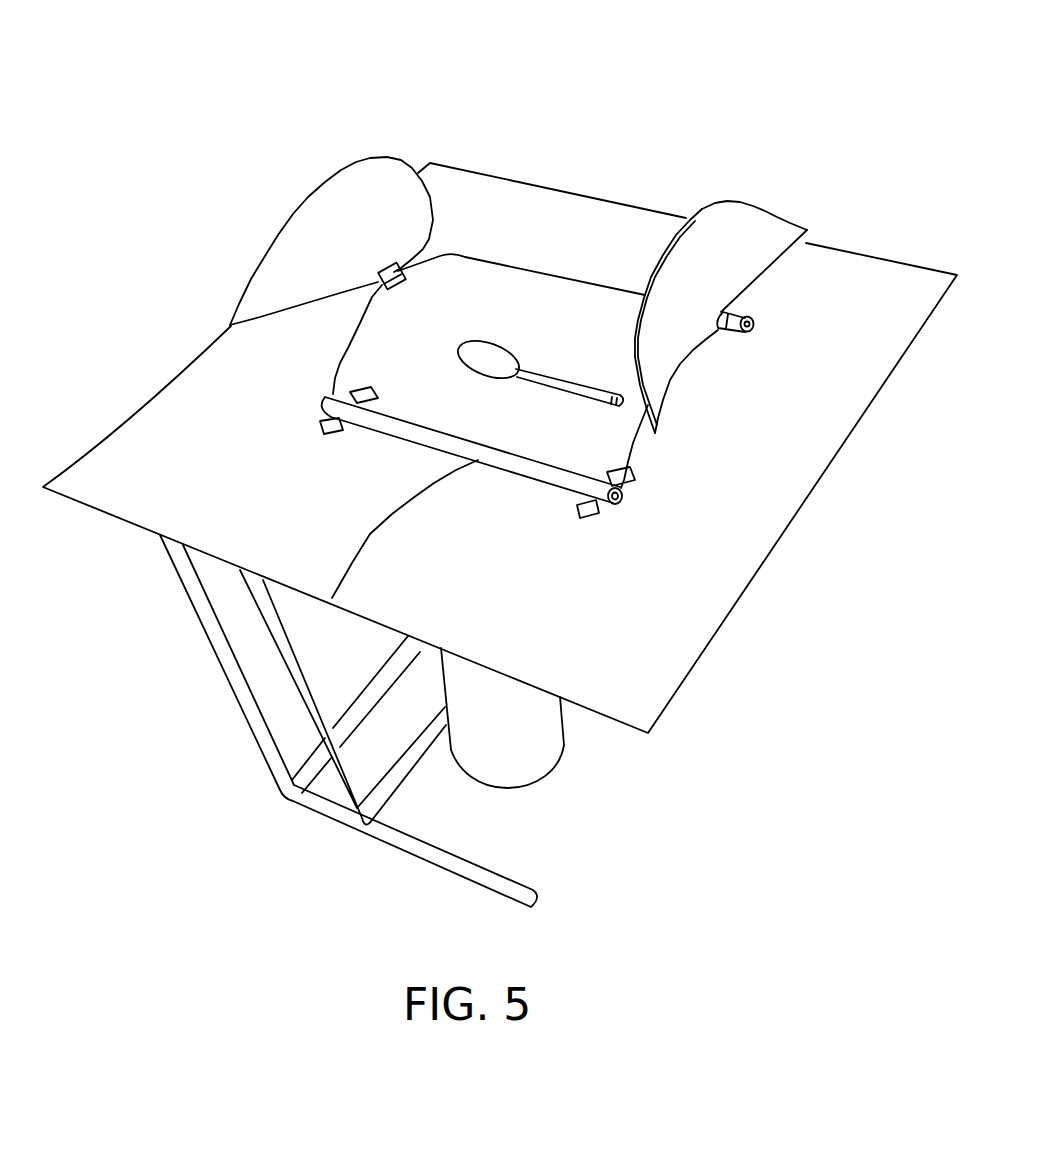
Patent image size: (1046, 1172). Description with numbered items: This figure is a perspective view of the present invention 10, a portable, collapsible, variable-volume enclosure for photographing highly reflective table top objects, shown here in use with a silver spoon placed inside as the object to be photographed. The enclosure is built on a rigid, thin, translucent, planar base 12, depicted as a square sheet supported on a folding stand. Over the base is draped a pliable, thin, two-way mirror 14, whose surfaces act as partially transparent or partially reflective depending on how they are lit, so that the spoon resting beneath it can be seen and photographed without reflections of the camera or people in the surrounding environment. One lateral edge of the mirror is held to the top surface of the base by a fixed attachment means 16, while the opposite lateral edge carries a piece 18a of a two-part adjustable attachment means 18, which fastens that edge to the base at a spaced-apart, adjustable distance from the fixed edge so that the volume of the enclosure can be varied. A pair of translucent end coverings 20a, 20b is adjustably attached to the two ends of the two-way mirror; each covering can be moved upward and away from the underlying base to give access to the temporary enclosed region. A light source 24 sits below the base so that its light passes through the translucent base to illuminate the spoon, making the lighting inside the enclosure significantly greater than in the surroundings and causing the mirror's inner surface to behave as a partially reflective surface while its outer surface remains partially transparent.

The present invention 10 is at (500, 466).
The planar base 12 is at (785, 478).
The two-way mirror 14 is at (490, 323).
The fixed attachment means 16 is at (794, 273).
The adjustable attachment means 18 is at (550, 522).
The piece of adjustable attachment means 18a is at (319, 619).
The end covering 20a is at (729, 295).
The end covering 20b is at (331, 208).
The light source 24 is at (537, 763).